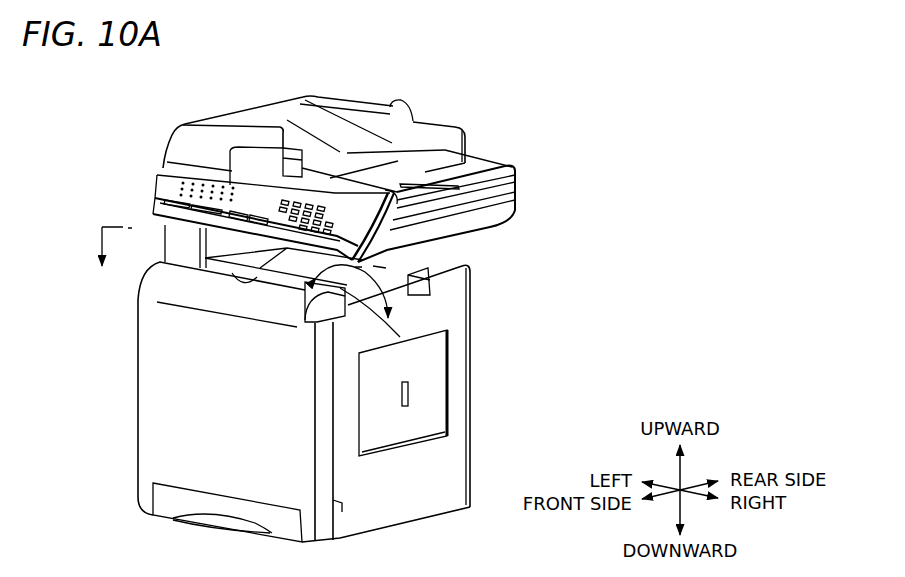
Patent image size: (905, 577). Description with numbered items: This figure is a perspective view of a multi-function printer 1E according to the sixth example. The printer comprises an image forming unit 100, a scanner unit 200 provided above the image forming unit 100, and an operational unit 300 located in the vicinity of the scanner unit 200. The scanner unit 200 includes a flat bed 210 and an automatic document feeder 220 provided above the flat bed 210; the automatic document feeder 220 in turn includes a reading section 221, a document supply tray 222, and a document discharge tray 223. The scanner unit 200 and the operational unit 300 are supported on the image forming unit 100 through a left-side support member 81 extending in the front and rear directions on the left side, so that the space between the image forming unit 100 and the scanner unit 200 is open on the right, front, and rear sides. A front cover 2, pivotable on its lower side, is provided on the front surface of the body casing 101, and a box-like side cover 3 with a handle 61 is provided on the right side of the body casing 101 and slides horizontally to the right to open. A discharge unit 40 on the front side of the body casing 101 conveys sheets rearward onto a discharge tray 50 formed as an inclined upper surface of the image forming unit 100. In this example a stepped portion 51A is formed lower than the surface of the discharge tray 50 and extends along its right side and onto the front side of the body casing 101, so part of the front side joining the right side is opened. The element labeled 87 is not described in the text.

The multi-function printer 1E is at (586, 69).
The scanner unit 200 is at (468, 113).
The flat bed 210 is at (512, 193).
The automatic document feeder 220 is at (342, 96).
The reading section 221 is at (273, 110).
The document supply tray 222 is at (407, 122).
The document discharge tray 223 is at (424, 172).
The operational unit 300 is at (171, 185).
The image forming unit 100 is at (510, 280).
The body casing 101 is at (478, 463).
The front cover 2 is at (166, 386).
The side cover 3 is at (436, 377).
The handle 61 is at (412, 392).
The discharge tray 50 is at (352, 262).
The stepped portion 51A is at (412, 281).
The discharge unit 40 is at (398, 336).
The left-side support member 81 is at (222, 253).
The front edge 87 is at (157, 303).